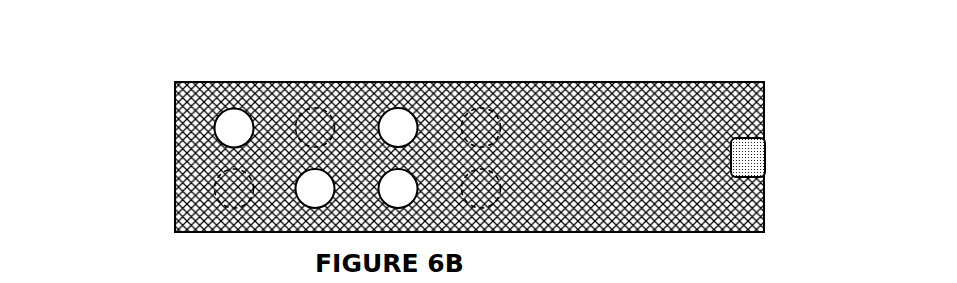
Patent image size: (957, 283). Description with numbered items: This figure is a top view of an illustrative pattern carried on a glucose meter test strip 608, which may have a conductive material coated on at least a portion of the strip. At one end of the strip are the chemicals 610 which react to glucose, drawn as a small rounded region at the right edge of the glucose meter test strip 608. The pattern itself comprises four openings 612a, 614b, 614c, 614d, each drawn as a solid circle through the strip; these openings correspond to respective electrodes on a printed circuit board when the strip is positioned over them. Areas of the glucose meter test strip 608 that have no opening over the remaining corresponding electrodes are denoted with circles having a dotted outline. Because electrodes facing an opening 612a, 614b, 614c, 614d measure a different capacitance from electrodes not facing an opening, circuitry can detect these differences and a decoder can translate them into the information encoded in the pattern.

The glucose meter test strip 608 is at (638, 81).
The chemicals 610 is at (754, 156).
The opening 612a is at (214, 119).
The opening 614b is at (306, 170).
The opening 614c is at (381, 171).
The opening 614d is at (381, 113).